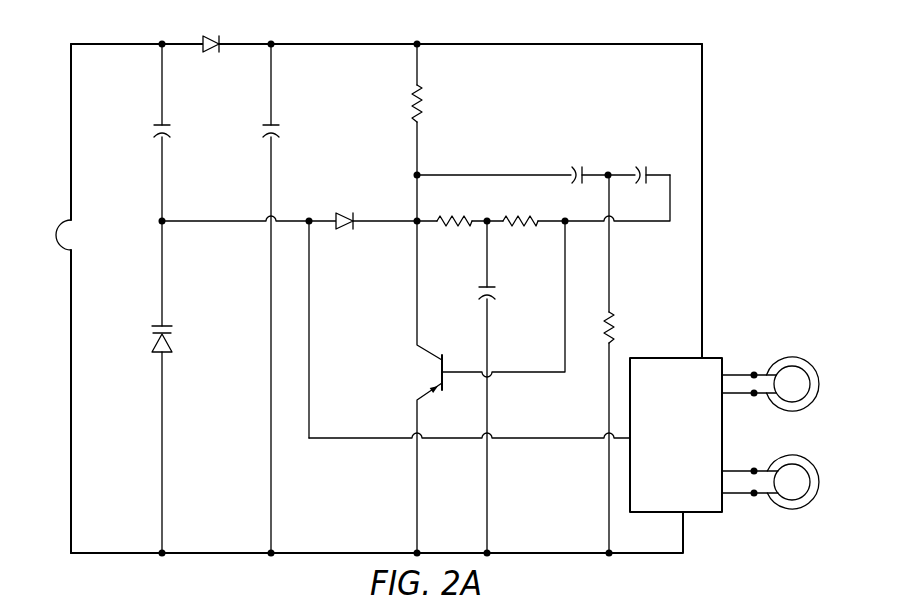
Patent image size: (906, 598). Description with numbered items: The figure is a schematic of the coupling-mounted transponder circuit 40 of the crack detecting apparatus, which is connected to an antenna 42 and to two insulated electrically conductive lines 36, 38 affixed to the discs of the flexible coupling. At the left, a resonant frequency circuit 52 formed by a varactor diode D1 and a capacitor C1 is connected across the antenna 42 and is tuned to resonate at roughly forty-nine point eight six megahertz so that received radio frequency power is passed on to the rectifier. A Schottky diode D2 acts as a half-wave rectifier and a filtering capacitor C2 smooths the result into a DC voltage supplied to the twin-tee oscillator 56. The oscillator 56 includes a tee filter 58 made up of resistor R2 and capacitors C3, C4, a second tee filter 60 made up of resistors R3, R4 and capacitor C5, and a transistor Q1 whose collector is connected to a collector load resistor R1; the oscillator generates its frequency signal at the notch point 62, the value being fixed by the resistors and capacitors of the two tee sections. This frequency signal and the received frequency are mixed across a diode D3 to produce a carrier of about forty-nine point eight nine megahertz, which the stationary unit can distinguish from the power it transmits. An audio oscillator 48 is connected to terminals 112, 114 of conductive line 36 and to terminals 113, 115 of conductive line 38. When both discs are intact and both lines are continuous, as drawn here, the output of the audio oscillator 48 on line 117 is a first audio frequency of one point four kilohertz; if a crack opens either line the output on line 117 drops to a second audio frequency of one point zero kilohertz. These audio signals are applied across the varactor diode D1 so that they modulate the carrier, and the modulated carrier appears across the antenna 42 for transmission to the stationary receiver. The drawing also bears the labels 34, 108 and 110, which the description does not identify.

The positive supply line 34 is at (252, 34).
The transponder circuit 40 is at (479, 30).
The antenna 42 is at (47, 212).
The resonant frequency circuit 52 is at (228, 556).
The twin-tee oscillator 56 is at (604, 160).
The tee filter 58 is at (611, 277).
The second tee filter 60 is at (492, 243).
The notch point 62 is at (654, 222).
The audio oscillator 48 is at (690, 325).
The line 117 is at (604, 438).
The insulated electrically conductive line 36 is at (797, 376).
The insulated electrically conductive line 38 is at (794, 486).
The speaker frame 108 is at (777, 357).
The speaker cone 110 is at (812, 364).
The terminal 112 is at (755, 372).
The terminal 114 is at (754, 396).
The terminal 113 is at (754, 468).
The terminal 115 is at (754, 497).
The capacitor C1 is at (176, 127).
The filtering capacitor C2 is at (286, 127).
The capacitor C3 is at (570, 165).
The capacitor C4 is at (641, 165).
The capacitor C5 is at (500, 291).
The varactor diode D1 is at (177, 338).
The Schottky diode D2 is at (208, 32).
The diode D3 is at (345, 211).
The collector load resistor R1 is at (434, 103).
The resistor R2 is at (622, 327).
The resistor R3 is at (454, 209).
The resistor R4 is at (520, 209).
The transistor Q1 is at (417, 374).